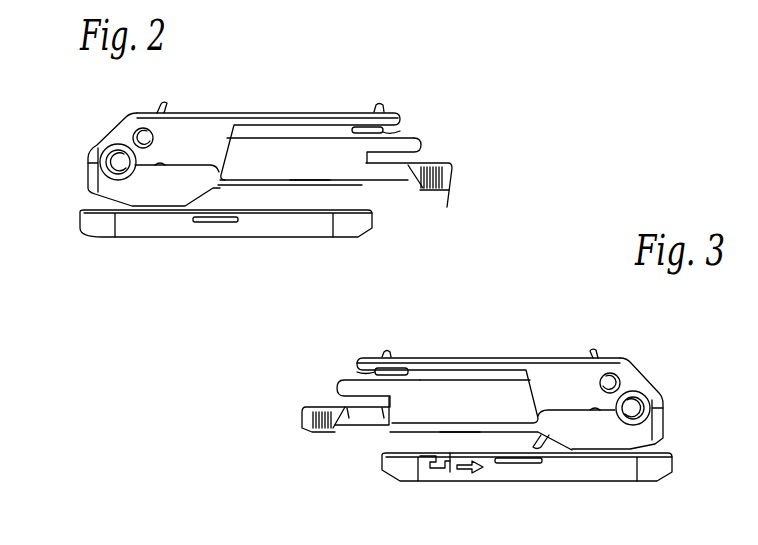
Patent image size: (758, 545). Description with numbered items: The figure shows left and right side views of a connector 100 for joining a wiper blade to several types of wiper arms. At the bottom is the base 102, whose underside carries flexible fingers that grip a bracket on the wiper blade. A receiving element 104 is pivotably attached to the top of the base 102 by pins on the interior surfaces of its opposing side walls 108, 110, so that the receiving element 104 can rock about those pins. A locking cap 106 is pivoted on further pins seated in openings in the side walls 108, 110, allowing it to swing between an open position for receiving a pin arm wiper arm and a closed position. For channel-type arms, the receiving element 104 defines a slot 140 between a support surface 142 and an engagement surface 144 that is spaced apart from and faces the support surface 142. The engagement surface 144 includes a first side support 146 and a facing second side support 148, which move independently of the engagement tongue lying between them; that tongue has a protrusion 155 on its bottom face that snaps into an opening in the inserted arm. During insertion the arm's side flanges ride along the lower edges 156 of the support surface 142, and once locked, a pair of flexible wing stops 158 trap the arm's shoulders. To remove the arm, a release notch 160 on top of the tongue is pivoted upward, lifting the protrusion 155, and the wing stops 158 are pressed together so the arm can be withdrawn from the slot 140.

In FIG. 2, the connector 100 is at (245, 301).
In FIG. 3, the connector 100 is at (507, 530).
In FIG. 2, the base 102 is at (318, 232).
In FIG. 3, the base 102 is at (588, 474).
In FIG. 2, the receiving element 104 is at (88, 188).
In FIG. 3, the receiving element 104 is at (573, 388).
In FIG. 2, the locking cap 106 is at (97, 147).
In FIG. 3, the locking cap 106 is at (638, 371).
In FIG. 2, the side wall 108 is at (234, 167).
In FIG. 3, the side wall 110 is at (520, 397).
In FIG. 2, the slot 140 is at (282, 132).
In FIG. 3, the slot 140 is at (468, 375).
In FIG. 2, the support surface 142 is at (423, 150).
In FIG. 3, the support surface 142 is at (337, 388).
In FIG. 2, the engagement surface 144 is at (218, 118).
In FIG. 3, the engagement surface 144 is at (503, 360).
In FIG. 3, the first side support 146 is at (433, 362).
In FIG. 2, the second side support 148 is at (258, 128).
In FIG. 2, the protrusion 155 is at (383, 132).
In FIG. 3, the protrusion 155 is at (357, 372).
In FIG. 2, the lower edges 156 is at (298, 183).
In FIG. 3, the lower edges 156 is at (462, 433).
In FIG. 2, the flexible wing stops 158 is at (448, 195).
In FIG. 3, the flexible wing stops 158 is at (303, 427).
In FIG. 2, the release notch 160 is at (383, 107).
In FIG. 3, the release notch 160 is at (387, 354).